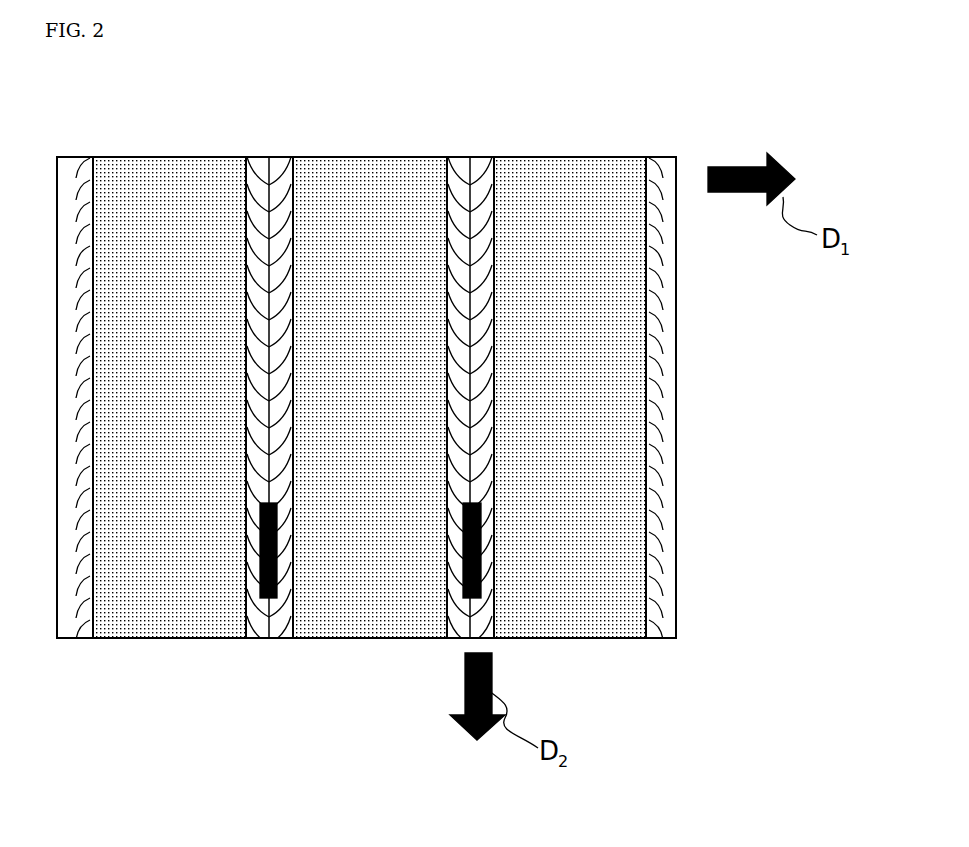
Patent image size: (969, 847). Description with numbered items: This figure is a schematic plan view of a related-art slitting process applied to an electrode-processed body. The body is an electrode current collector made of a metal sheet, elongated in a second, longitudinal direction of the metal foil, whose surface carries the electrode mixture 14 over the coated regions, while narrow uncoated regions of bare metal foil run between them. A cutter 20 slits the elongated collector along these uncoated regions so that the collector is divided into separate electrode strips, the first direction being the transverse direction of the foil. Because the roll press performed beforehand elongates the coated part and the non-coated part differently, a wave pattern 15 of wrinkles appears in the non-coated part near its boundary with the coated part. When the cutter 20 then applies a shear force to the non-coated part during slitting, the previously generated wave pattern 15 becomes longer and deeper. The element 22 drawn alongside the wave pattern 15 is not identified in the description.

The panel 14 is at (160, 168).
The groove 15 is at (254, 168).
The seam 22 is at (274, 172).
The fastener 20 is at (262, 580).